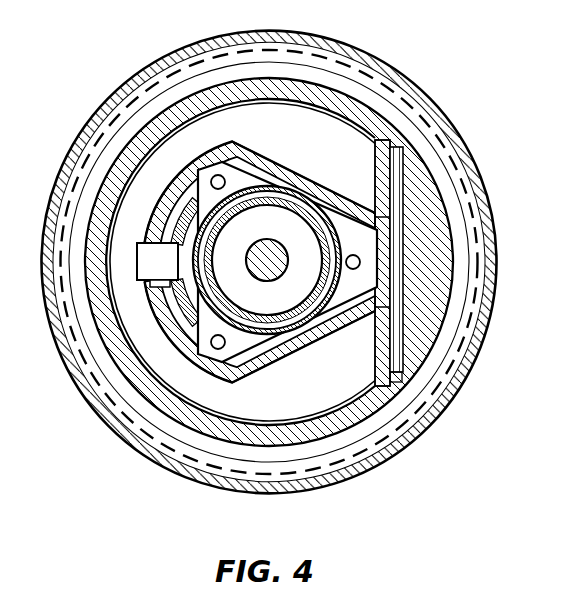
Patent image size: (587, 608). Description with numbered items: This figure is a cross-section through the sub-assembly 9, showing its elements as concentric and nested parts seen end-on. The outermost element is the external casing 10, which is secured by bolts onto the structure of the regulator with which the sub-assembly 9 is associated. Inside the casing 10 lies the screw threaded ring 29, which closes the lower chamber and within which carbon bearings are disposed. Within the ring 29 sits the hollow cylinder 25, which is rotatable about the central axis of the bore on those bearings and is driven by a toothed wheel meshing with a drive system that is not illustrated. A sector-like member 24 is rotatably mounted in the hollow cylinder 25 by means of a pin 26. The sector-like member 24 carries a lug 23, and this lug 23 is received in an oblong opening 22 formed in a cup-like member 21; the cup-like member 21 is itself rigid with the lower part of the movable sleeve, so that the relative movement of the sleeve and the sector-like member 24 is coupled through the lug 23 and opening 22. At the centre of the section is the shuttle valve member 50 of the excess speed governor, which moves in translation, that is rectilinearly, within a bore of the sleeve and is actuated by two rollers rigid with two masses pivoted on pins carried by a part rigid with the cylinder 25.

The sub-assembly 9 is at (125, 54).
The external casing 10 is at (446, 350).
The cup-like member 21 is at (178, 315).
The oblong opening 22 is at (160, 286).
The lug 23 is at (150, 257).
The sector-like member 24 is at (157, 183).
The hollow cylinder 25 is at (100, 368).
The pin 26 is at (397, 167).
The screw threaded ring 29 is at (428, 413).
The shuttle valve member 50 is at (270, 254).